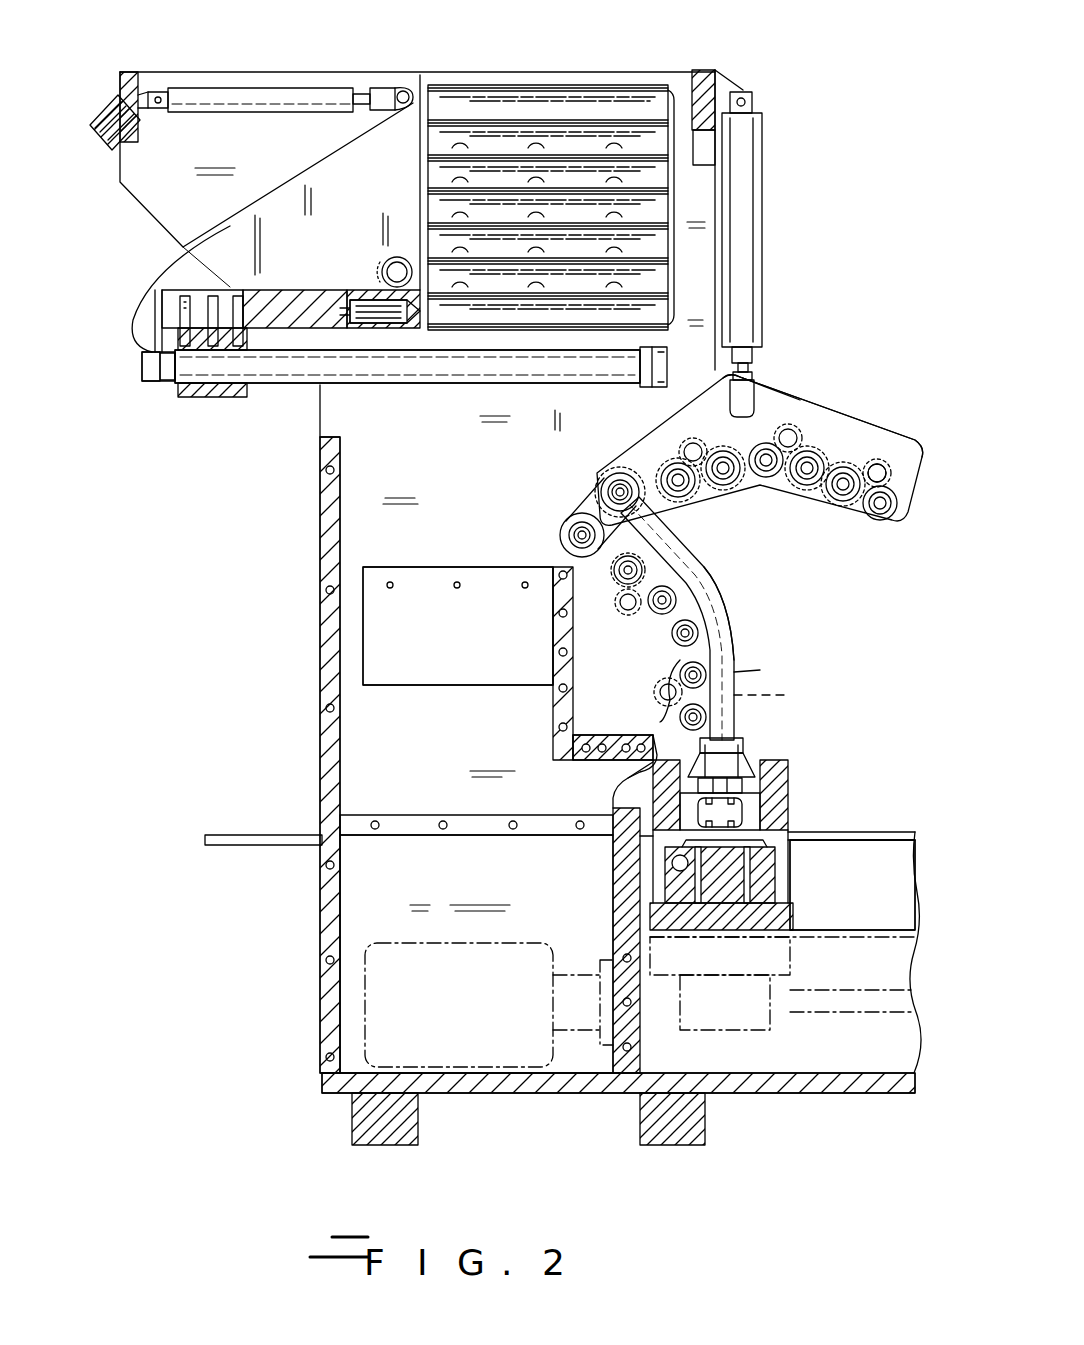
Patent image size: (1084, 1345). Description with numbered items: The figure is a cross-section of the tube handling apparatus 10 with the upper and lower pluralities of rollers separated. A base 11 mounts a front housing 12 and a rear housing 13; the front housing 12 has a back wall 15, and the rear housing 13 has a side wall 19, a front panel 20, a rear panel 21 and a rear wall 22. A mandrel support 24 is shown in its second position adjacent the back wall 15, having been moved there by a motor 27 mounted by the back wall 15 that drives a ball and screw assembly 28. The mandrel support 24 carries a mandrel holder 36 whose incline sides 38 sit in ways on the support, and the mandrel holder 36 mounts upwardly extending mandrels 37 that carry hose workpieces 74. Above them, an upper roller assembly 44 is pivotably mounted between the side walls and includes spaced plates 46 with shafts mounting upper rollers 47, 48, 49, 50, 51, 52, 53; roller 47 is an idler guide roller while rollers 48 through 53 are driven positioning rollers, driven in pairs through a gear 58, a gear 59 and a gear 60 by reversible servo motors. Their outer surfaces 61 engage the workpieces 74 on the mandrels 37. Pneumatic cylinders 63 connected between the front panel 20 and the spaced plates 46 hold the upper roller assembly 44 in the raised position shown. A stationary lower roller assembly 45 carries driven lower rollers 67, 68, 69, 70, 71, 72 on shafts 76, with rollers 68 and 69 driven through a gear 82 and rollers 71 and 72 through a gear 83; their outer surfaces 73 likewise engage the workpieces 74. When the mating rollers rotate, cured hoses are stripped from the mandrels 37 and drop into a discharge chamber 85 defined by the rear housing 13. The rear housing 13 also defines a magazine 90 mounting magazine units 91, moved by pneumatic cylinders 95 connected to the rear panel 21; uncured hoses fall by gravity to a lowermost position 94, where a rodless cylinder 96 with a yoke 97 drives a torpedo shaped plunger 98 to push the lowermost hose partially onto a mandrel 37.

The tube handling apparatus 10 is at (318, 905).
The base 11 is at (510, 1093).
The front housing 12 is at (318, 568).
The rear housing 13 is at (415, 754).
The back wall 15 is at (613, 865).
The side wall 19 is at (477, 458).
The front panel 20 is at (722, 80).
The rear panel 21 is at (118, 95).
The rear wall 22 is at (318, 708).
The mandrel support 24 is at (800, 856).
The motor 27 is at (408, 942).
The ball and screw assembly 28 is at (844, 982).
The mandrel holder 36 is at (761, 760).
The mandrels 37 is at (787, 689).
The incline sides 38 is at (790, 772).
The upper roller assembly 44 is at (826, 402).
The lower roller assembly 45 is at (610, 633).
The spaced plates 46 is at (863, 420).
The upper roller 47 is at (600, 488).
The upper roller 48 is at (687, 495).
The upper roller 49 is at (722, 482).
The upper roller 50 is at (768, 477).
The upper roller 51 is at (807, 492).
The upper roller 52 is at (844, 506).
The upper roller 53 is at (892, 516).
The gear 58 is at (670, 445).
The gear 59 is at (774, 422).
The gear 60 is at (883, 454).
The outer surfaces 61 is at (620, 475).
The pneumatic cylinders 63 is at (762, 200).
The lower roller 67 is at (560, 530).
The lower roller 68 is at (613, 570).
The lower roller 69 is at (652, 610).
The lower roller 70 is at (720, 638).
The lower roller 71 is at (660, 692).
The lower roller 72 is at (640, 755).
The outer surfaces 73 is at (710, 600).
The workpieces 74 is at (760, 670).
The shafts 76 is at (680, 670).
The gear 82 is at (555, 593).
The gear 83 is at (660, 700).
The discharge chamber 85 is at (503, 732).
The magazine 90 is at (485, 70).
The magazine units 91 is at (377, 196).
The lowermost position 94 is at (467, 312).
The pneumatic cylinders 95 is at (262, 93).
The rodless cylinder 96 is at (270, 385).
The yoke 97 is at (180, 395).
The torpedo shaped plunger 98 is at (343, 292).